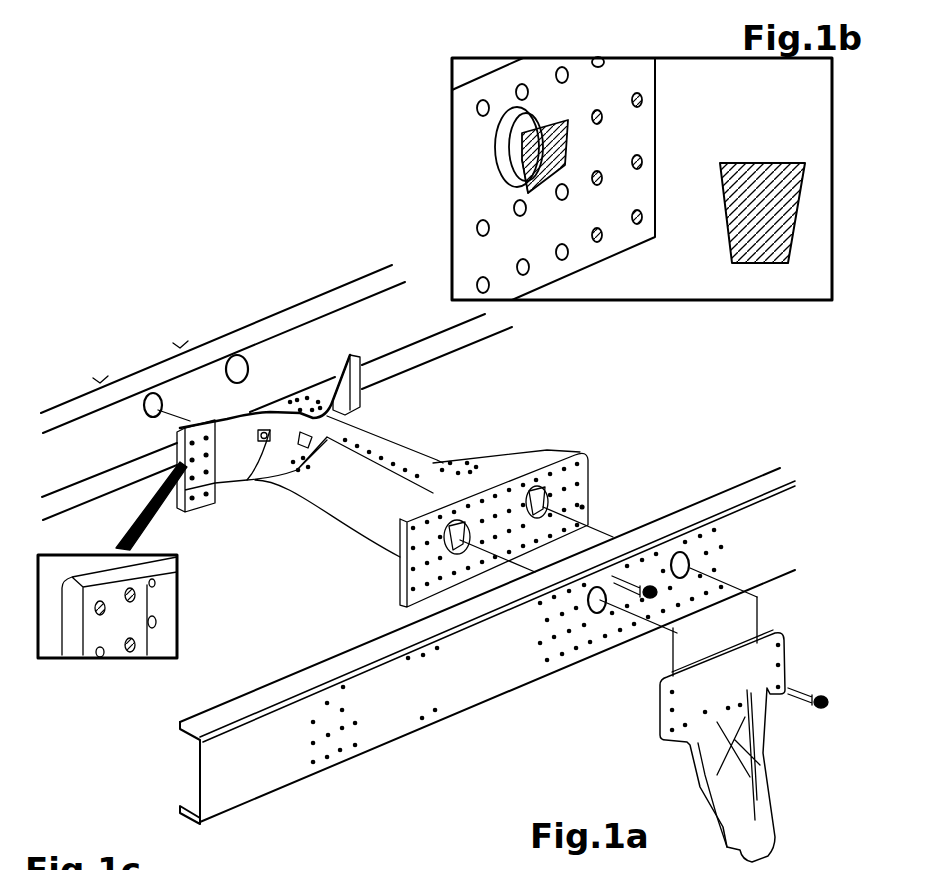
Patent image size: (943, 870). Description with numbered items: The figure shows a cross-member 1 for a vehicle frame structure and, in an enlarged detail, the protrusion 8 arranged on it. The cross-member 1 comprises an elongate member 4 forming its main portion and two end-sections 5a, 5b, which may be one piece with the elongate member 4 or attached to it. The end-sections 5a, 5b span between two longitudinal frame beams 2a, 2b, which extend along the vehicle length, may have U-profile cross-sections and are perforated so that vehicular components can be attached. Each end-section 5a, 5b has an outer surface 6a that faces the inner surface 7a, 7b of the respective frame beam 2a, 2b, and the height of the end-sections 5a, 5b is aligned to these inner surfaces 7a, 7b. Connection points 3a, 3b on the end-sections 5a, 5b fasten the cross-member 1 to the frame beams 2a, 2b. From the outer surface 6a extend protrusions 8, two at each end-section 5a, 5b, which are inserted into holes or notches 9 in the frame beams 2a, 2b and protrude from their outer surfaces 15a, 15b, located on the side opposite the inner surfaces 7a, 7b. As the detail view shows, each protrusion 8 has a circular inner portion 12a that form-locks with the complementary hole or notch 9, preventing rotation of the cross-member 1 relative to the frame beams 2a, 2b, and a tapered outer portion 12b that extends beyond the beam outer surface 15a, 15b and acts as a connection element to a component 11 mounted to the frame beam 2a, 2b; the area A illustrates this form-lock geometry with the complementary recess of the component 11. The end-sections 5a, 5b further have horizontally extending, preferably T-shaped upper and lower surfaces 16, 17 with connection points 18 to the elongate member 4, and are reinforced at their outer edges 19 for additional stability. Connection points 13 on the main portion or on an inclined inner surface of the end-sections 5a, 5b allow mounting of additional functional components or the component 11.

In FIG. 1A, the cross-member 1 is at (433, 432).
In FIG. 1A, the longitudinal frame beam 2a is at (272, 762).
In FIG. 1A, the longitudinal frame beam 2b is at (85, 428).
In FIG. 1A, the connection point 3a is at (585, 507).
In FIG. 1A, the connection point 3b is at (190, 500).
In FIG. 1A, the elongate member 4 is at (380, 492).
In FIG. 1A, the end-section 5a is at (588, 450).
In FIG. 1A, the end-section 5b is at (355, 378).
In FIG. 1A, the outer surface 6a is at (580, 470).
In FIG. 1A, the inner surface 7a is at (200, 768).
In FIG. 1A, the inner surface 7b is at (398, 324).
In FIG. 1A, the protrusion 8 is at (455, 538).
In FIG. 1B, the protrusion 8 is at (553, 150).
In FIG. 1A, the hole or notch 9 is at (233, 378).
In FIG. 1A, the component 11 is at (753, 770).
In FIG. 1B, the inner portion of the protrusion 12a is at (540, 117).
In FIG. 1B, the outer portion of the protrusion 12b is at (547, 163).
In FIG. 1A, the connection points 13 is at (305, 440).
In FIG. 1A, the outer surface 15a is at (386, 716).
In FIG. 1A, the outer surface 15b is at (340, 277).
In FIG. 1A, the upper surface 16 is at (285, 388).
In FIG. 1A, the lower surface 17 is at (258, 465).
In FIG. 1A, the connection points 18 is at (300, 472).
In FIG. 1A, the outer edges 19 is at (77, 647).
In FIG. 1B, the area A is at (737, 247).